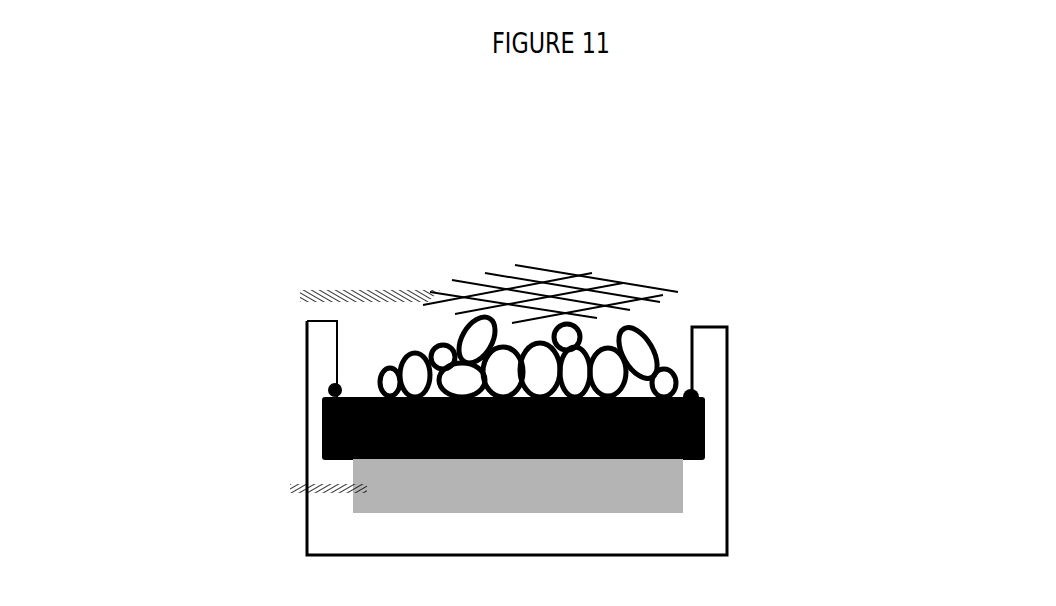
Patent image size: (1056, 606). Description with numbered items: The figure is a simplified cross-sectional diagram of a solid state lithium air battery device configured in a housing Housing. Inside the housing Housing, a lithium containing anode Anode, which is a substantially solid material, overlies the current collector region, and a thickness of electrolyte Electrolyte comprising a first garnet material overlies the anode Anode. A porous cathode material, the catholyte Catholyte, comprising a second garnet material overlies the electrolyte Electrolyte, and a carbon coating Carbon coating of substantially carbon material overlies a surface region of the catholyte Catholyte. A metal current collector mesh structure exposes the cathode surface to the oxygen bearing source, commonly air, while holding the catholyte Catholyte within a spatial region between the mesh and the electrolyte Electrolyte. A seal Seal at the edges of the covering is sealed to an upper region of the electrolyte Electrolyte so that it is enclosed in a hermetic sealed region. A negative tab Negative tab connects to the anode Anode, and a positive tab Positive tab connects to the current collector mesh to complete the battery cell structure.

The positive tab Positive tab is at (290, 295).
The catholyte Catholyte is at (366, 386).
The carbon coating Carbon coating is at (669, 357).
The seal Seal is at (314, 395).
The electrolyte Electrolyte is at (724, 437).
The anode Anode is at (678, 488).
The negative tab Negative tab is at (281, 496).
The housing Housing is at (742, 549).